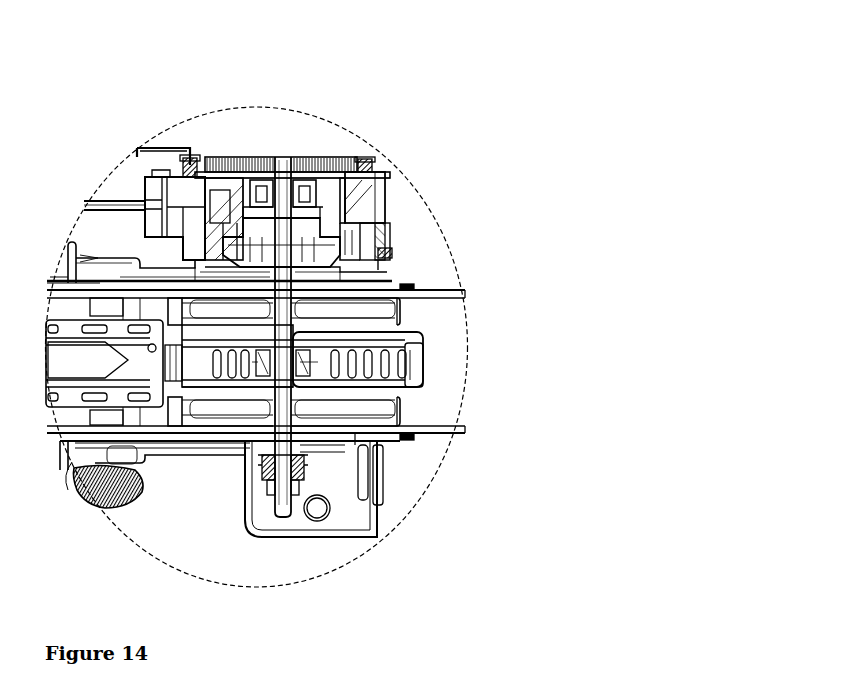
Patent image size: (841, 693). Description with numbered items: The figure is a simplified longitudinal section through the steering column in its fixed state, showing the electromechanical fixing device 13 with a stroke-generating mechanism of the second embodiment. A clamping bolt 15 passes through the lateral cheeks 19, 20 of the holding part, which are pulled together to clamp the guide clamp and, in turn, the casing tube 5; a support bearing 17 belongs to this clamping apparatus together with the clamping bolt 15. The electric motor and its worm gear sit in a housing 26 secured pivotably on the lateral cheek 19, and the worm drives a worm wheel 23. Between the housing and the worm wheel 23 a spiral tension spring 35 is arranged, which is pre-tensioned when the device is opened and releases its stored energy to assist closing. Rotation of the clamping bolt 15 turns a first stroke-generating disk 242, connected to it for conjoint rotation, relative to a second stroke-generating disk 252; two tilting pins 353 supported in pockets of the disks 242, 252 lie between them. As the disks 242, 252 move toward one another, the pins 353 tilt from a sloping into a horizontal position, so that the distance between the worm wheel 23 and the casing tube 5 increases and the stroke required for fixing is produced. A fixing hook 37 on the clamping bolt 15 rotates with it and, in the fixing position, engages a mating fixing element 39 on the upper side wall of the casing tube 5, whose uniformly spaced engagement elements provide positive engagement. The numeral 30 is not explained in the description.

The casing tube 5 is at (437, 327).
The electromechanical fixing device 13 is at (254, 134).
The clamping bolt 15 is at (293, 515).
The support bearing 17 is at (266, 511).
The lateral cheek 19 is at (183, 268).
The lateral cheek 20 is at (235, 452).
The worm wheel 23 is at (363, 200).
The housing 26 is at (185, 160).
The pin 30 is at (387, 223).
The spiral tension spring 35 is at (320, 188).
The fixing hook 37 is at (425, 367).
The mating fixing element 39 is at (408, 378).
The first stroke-generating disk 242 is at (280, 230).
The second stroke-generating disk 252 is at (387, 252).
The pins 353 is at (243, 205).